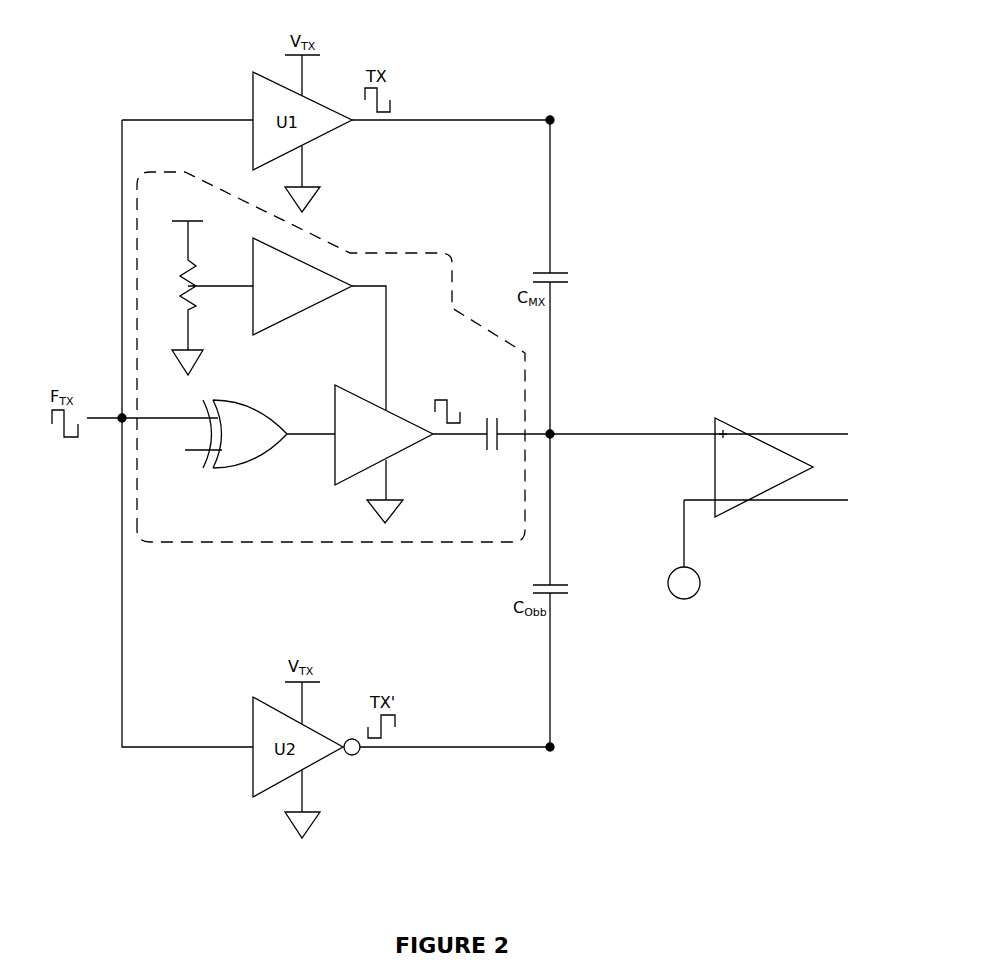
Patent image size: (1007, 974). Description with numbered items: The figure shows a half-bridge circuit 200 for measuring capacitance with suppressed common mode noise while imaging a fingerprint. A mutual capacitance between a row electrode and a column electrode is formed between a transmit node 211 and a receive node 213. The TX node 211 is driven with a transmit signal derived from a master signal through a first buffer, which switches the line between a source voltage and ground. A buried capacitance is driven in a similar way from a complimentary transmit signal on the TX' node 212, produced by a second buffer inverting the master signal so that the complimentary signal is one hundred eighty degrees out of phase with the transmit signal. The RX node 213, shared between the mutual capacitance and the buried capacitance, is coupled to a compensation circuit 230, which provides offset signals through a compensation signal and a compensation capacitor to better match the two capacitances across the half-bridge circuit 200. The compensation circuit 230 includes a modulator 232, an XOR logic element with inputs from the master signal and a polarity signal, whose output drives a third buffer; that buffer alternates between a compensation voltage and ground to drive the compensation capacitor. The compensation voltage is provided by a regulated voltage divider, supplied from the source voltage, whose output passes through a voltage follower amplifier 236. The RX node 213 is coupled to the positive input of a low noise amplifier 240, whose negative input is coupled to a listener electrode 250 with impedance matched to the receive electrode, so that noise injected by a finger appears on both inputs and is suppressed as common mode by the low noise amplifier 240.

The half-bridge circuit 200 is at (733, 86).
The transmit (TX) node 211 is at (549, 98).
The TX' node 212 is at (549, 772).
The receive (RX) node 213 is at (672, 404).
The compensation circuit 230 is at (527, 502).
The modulator 232 is at (260, 434).
The amplifier (Amp) 236 is at (302, 286).
The low noise amplifier (LNA) 240 is at (766, 467).
The listener electrode 250 is at (668, 578).